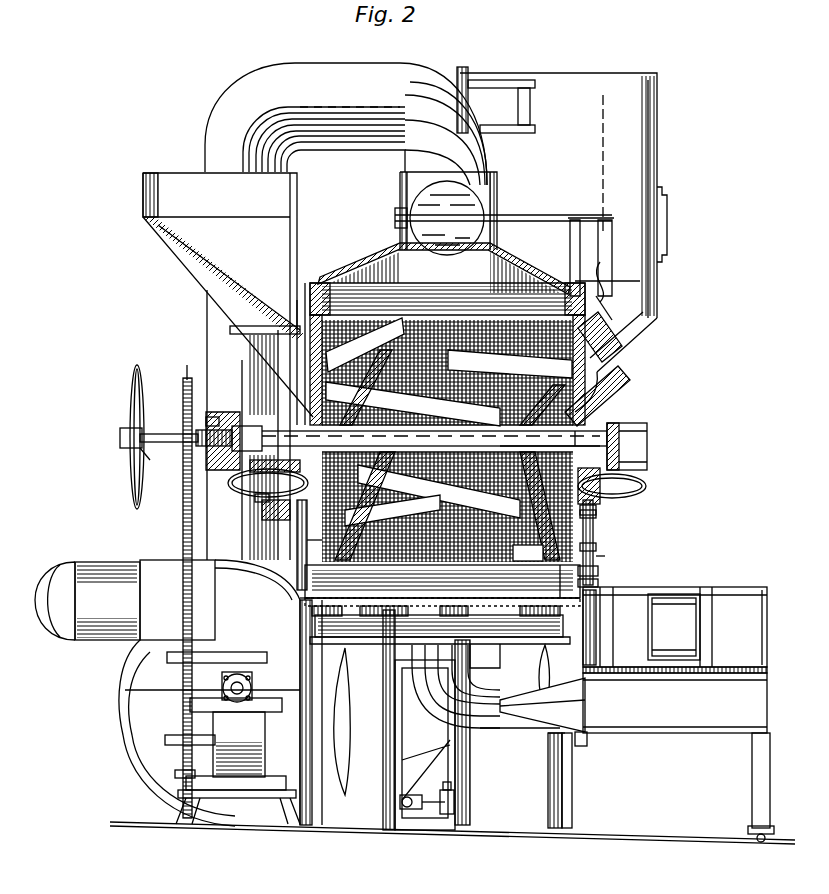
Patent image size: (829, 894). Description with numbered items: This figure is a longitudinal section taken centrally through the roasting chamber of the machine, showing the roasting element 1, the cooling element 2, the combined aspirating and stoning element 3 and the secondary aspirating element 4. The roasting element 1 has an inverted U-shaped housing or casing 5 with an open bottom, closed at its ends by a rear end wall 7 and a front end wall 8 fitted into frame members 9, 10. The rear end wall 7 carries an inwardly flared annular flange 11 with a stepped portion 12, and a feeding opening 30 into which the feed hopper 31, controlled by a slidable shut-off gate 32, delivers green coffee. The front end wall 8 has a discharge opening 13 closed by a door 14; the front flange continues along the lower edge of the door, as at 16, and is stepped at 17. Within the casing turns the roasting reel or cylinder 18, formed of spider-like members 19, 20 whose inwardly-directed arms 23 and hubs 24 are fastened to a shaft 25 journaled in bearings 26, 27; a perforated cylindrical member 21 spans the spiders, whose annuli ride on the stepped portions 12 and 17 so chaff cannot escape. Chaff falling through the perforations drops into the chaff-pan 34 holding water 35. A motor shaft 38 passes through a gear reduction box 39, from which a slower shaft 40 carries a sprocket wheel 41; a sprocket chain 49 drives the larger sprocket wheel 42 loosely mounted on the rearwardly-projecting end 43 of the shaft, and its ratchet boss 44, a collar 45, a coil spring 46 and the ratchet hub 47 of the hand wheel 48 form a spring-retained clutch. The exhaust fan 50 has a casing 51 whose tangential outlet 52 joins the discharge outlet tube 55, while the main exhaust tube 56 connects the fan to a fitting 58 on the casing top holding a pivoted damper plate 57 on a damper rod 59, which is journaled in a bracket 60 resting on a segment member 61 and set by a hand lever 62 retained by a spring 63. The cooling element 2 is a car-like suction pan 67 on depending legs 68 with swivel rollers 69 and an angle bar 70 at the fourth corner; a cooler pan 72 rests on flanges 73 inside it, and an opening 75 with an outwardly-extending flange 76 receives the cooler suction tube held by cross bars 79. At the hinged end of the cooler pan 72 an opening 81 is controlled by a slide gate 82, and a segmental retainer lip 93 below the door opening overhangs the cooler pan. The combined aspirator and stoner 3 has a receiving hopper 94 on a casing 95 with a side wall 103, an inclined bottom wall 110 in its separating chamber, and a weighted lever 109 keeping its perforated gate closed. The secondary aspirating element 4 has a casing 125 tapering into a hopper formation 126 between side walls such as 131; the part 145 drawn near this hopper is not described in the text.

The roasting element 1 is at (594, 528).
The cooling element 2 is at (767, 643).
The combined aspirating and stoning element 3 is at (470, 775).
The secondary aspirating element 4 is at (657, 157).
The housing or casing 5 is at (353, 265).
The rear end wall 7 is at (300, 530).
The front end wall 8 is at (596, 547).
The frame member 9 is at (300, 598).
The frame member 10 is at (596, 608).
The annular flange 11 is at (290, 318).
The stepped portion 12 is at (300, 305).
The discharge opening 13 is at (598, 572).
The door 14 is at (596, 516).
The flange continuation 16 is at (598, 557).
The stepped portion 17 is at (600, 317).
The roasting reel or cylinder 18 is at (497, 578).
The spider-like member 19 is at (308, 550).
The spider-like member 20 is at (528, 551).
The perforated cylindrical member 21 is at (442, 490).
The inwardly-directed arms 23 is at (265, 508).
The hubs 24 is at (421, 438).
The shaft 25 is at (585, 428).
The rear bearing 26 is at (269, 438).
The front bearing 27 is at (645, 452).
The feeding opening 30 is at (290, 375).
The feed hopper 31 is at (206, 270).
The shut-off gate 32 is at (246, 340).
The chaff-pan 34 is at (488, 655).
The water 35 is at (444, 636).
The motor shaft 38 is at (240, 688).
The gear reduction box 39 is at (238, 761).
The shaft 40 is at (165, 740).
The sprocket wheel 41 is at (185, 775).
The sprocket wheel 42 is at (187, 372).
The rearwardly-projecting end 43 is at (124, 440).
The ratchet boss 44 is at (180, 443).
The collar 45 is at (222, 448).
The coil spring 46 is at (214, 428).
The ratchet hub 47 is at (150, 460).
The hand wheel 48 is at (133, 386).
The sprocket chain 49 is at (184, 545).
The exhaust fan 50 is at (122, 703).
The fan casing 51 is at (160, 672).
The tangential exhaust or outlet 52 is at (106, 565).
The discharge outlet tube 55 is at (55, 565).
The main exhaust tube 56 is at (246, 108).
The damper plate 57 is at (470, 205).
The fitting 58 is at (405, 210).
The damper rod 59 is at (522, 222).
The bracket 60 is at (578, 222).
The segment member 61 is at (612, 280).
The hand lever 62 is at (612, 300).
The spring 63 is at (606, 278).
The suction pan 67 is at (706, 727).
The depending legs 68 is at (756, 778).
The swivel rollers 69 is at (758, 838).
The angle bar 70 is at (574, 792).
The cooler pan 72 is at (762, 622).
The flanges 73 is at (760, 683).
The opening 75 is at (585, 720).
The outwardly-extending flange 76 is at (582, 745).
The cross bars 79 is at (560, 735).
The opening 81 is at (684, 668).
The slide gate or damper 82 is at (650, 632).
The segmental retainer lip or flange 93 is at (600, 580).
The receiving hopper 94 is at (502, 670).
The casing 95 is at (383, 752).
The side wall 103 is at (425, 815).
The weighted lever 109 is at (440, 815).
The inclined bottom wall 110 is at (420, 750).
The casing 125 is at (620, 118).
The hopper formation 126 is at (600, 345).
The side wall 131 is at (667, 212).
The deflector 145 is at (605, 384).